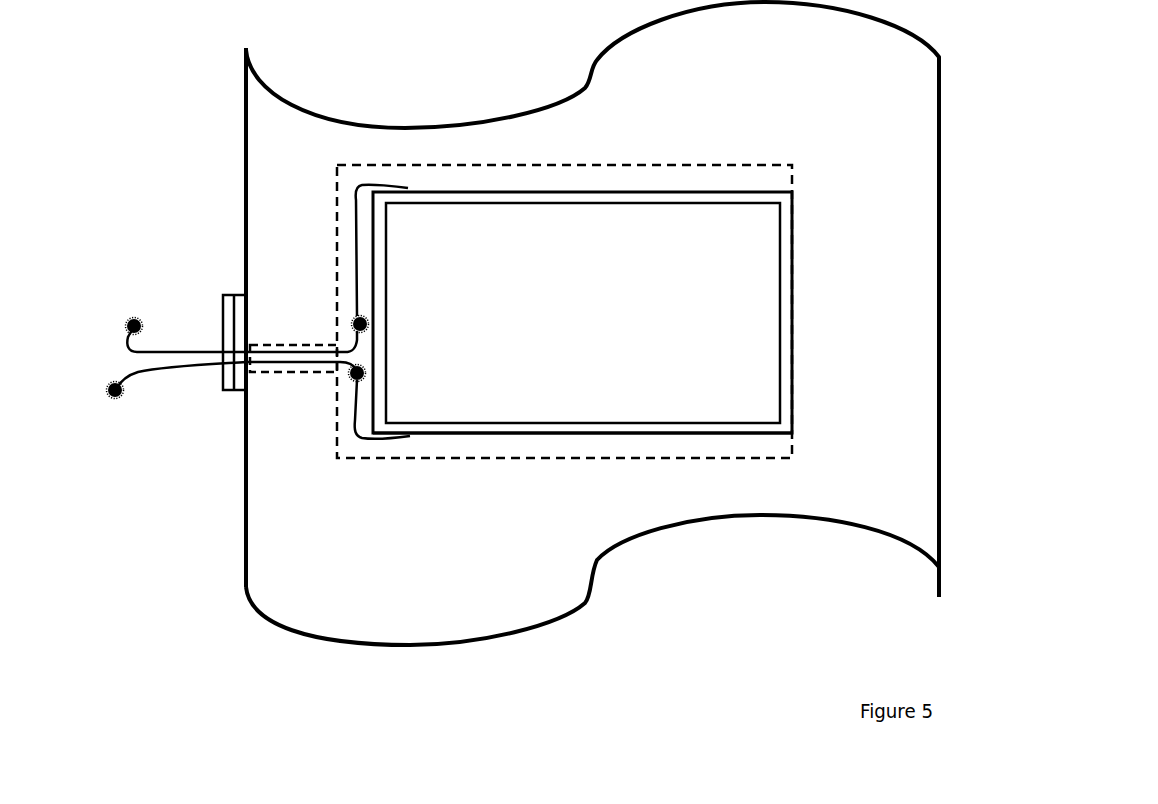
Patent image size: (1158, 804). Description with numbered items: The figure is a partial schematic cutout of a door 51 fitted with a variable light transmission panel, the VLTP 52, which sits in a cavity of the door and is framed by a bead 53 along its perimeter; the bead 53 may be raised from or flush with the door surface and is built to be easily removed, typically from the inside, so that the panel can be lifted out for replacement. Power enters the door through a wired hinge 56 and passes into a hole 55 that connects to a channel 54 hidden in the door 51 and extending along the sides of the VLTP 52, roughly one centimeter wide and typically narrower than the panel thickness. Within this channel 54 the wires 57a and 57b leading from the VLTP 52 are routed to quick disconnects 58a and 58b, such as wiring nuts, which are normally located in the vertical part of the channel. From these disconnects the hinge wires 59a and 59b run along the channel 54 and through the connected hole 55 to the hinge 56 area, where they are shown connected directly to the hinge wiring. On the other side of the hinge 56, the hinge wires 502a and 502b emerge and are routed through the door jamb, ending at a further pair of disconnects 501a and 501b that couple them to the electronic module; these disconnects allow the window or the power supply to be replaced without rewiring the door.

The door 51 is at (955, 170).
The VLTP 52 is at (748, 258).
The bead 53 is at (785, 292).
The channel 54 is at (780, 442).
The hole 55 is at (303, 345).
The hinge 56 is at (222, 388).
The wire 57a is at (358, 441).
The wire 57b is at (357, 272).
The quick disconnect 58a is at (352, 378).
The quick disconnect 58b is at (353, 321).
The hinge wire 59a is at (293, 365).
The hinge wire 59b is at (322, 352).
The disconnect 501a is at (94, 380).
The disconnect 501b is at (109, 317).
The hinge wire 502a is at (177, 368).
The hinge wire 502b is at (177, 352).